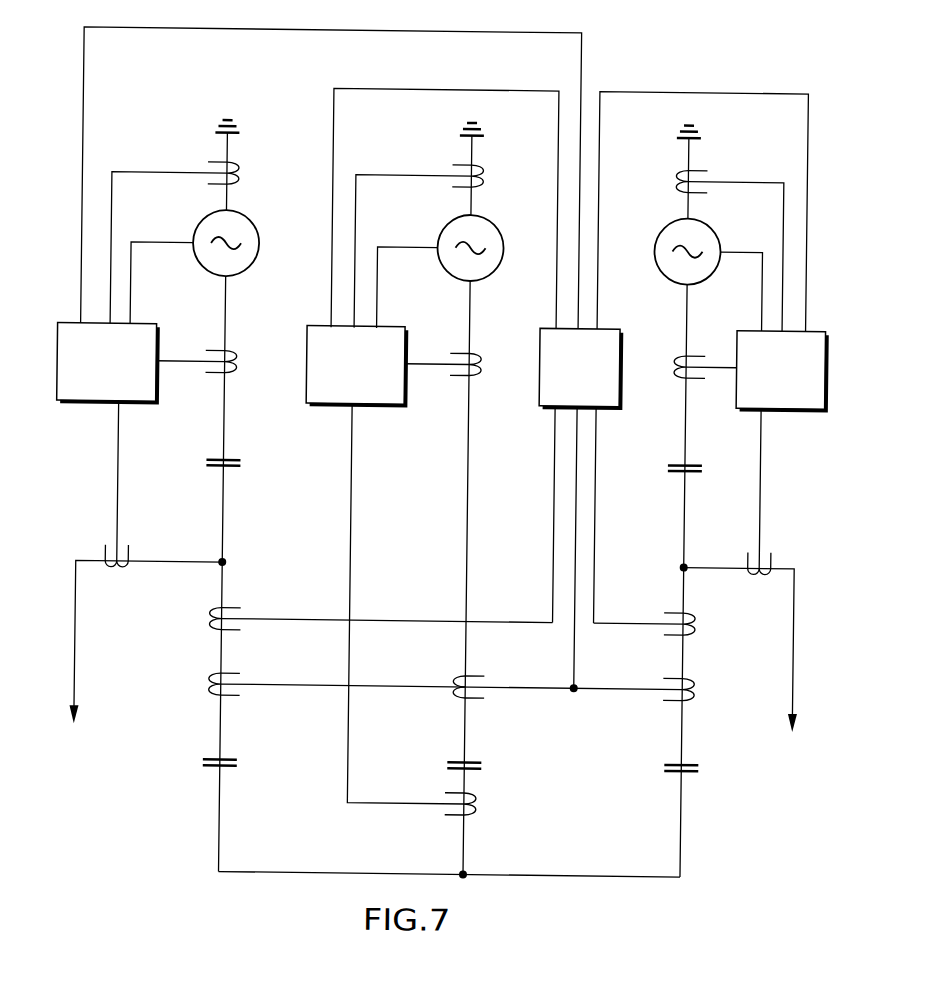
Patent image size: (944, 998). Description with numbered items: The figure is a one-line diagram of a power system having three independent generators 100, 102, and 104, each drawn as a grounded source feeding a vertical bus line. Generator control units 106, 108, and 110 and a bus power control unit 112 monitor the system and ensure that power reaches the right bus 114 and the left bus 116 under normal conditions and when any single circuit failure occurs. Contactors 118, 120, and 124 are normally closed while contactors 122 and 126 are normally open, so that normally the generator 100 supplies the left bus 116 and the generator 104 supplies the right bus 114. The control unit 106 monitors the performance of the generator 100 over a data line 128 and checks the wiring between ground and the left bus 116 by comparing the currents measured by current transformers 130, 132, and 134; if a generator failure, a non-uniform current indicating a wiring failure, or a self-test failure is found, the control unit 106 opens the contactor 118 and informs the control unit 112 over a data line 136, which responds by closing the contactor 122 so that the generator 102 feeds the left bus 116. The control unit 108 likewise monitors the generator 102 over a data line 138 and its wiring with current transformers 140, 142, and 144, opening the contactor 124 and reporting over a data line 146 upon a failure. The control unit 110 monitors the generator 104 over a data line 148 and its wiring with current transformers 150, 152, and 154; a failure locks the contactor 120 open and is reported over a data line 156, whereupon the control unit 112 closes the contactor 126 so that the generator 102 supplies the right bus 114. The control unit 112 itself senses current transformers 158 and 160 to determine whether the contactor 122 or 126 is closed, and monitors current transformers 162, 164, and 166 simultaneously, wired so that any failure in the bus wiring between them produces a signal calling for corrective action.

The generator 100 is at (247, 223).
The generator 102 is at (492, 222).
The generator 104 is at (709, 222).
The generator control unit 106 is at (156, 394).
The generator control unit 108 is at (404, 393).
The generator control unit 110 is at (736, 387).
The bus power control unit 112 is at (539, 387).
The right bus 114 is at (795, 666).
The left bus 116 is at (77, 677).
The contactor 118 is at (248, 449).
The contactor 120 is at (668, 460).
The contactor 122 is at (241, 765).
The contactor 124 is at (486, 763).
The contactor 126 is at (700, 762).
The data line 128 is at (128, 299).
The current transformer 130 is at (236, 168).
The current transformer 132 is at (238, 355).
The current transformer 134 is at (121, 574).
The data line 136 is at (78, 127).
The data line 138 is at (375, 303).
The current transformer 140 is at (481, 166).
The current transformer 142 is at (483, 352).
The current transformer 144 is at (484, 803).
The data line 146 is at (450, 90).
The data line 148 is at (740, 249).
The current transformer 150 is at (696, 170).
The current transformer 152 is at (698, 355).
The current transformer 154 is at (751, 575).
The data line 156 is at (802, 114).
The current transformer 158 is at (241, 610).
The current transformer 160 is at (673, 610).
The current transformer 162 is at (242, 676).
The current transformer 164 is at (480, 678).
The current transformer 166 is at (674, 676).